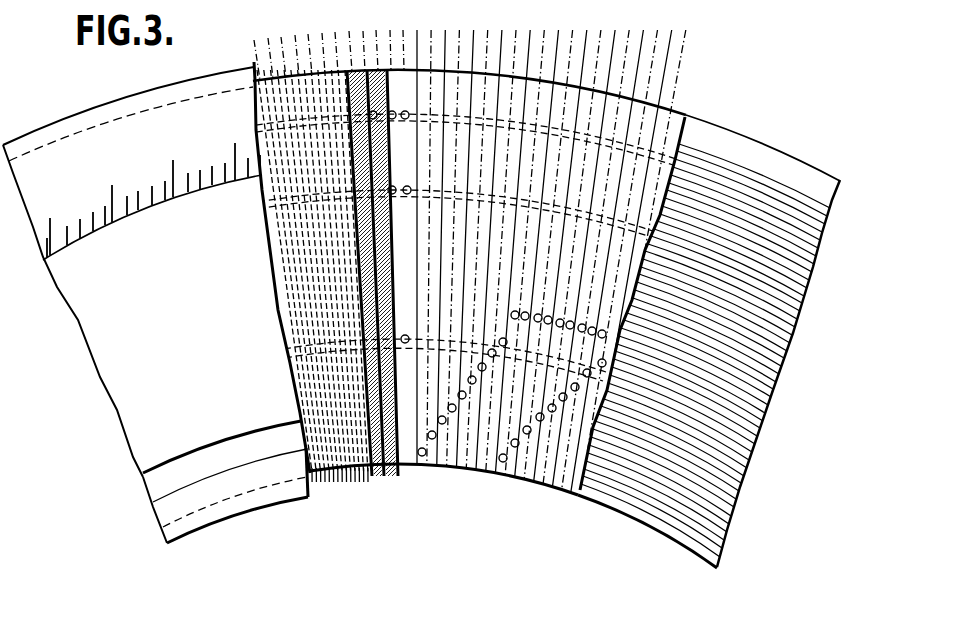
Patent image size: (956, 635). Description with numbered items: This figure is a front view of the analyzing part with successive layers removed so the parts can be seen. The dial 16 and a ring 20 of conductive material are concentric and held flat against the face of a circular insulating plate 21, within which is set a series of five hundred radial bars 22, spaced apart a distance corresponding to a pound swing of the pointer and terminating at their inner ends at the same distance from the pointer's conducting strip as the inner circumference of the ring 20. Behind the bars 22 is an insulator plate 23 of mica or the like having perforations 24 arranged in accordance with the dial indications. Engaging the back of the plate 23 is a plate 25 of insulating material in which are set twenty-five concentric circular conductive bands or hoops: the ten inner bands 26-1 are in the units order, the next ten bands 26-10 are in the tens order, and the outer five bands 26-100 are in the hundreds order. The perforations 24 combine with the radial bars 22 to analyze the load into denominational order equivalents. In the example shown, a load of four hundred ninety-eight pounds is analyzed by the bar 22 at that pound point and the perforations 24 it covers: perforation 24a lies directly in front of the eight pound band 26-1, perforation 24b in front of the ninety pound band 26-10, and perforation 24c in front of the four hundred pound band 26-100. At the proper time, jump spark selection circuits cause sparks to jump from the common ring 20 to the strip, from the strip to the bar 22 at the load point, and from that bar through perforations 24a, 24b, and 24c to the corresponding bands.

The dial 16 is at (120, 368).
The ring 20 is at (197, 500).
The circular insulating plate 21 is at (162, 480).
The radial bars 22 is at (387, 477).
The insulator plate 23 is at (470, 440).
The perforations 24 is at (550, 412).
The perforation 24a is at (408, 336).
The perforation 24b is at (407, 187).
The perforation 24c is at (406, 112).
The plate 25 is at (607, 497).
The units order bands 26-1 is at (698, 537).
The tens order bands 26-10 is at (745, 415).
The hundreds order bands 26-100 is at (758, 192).